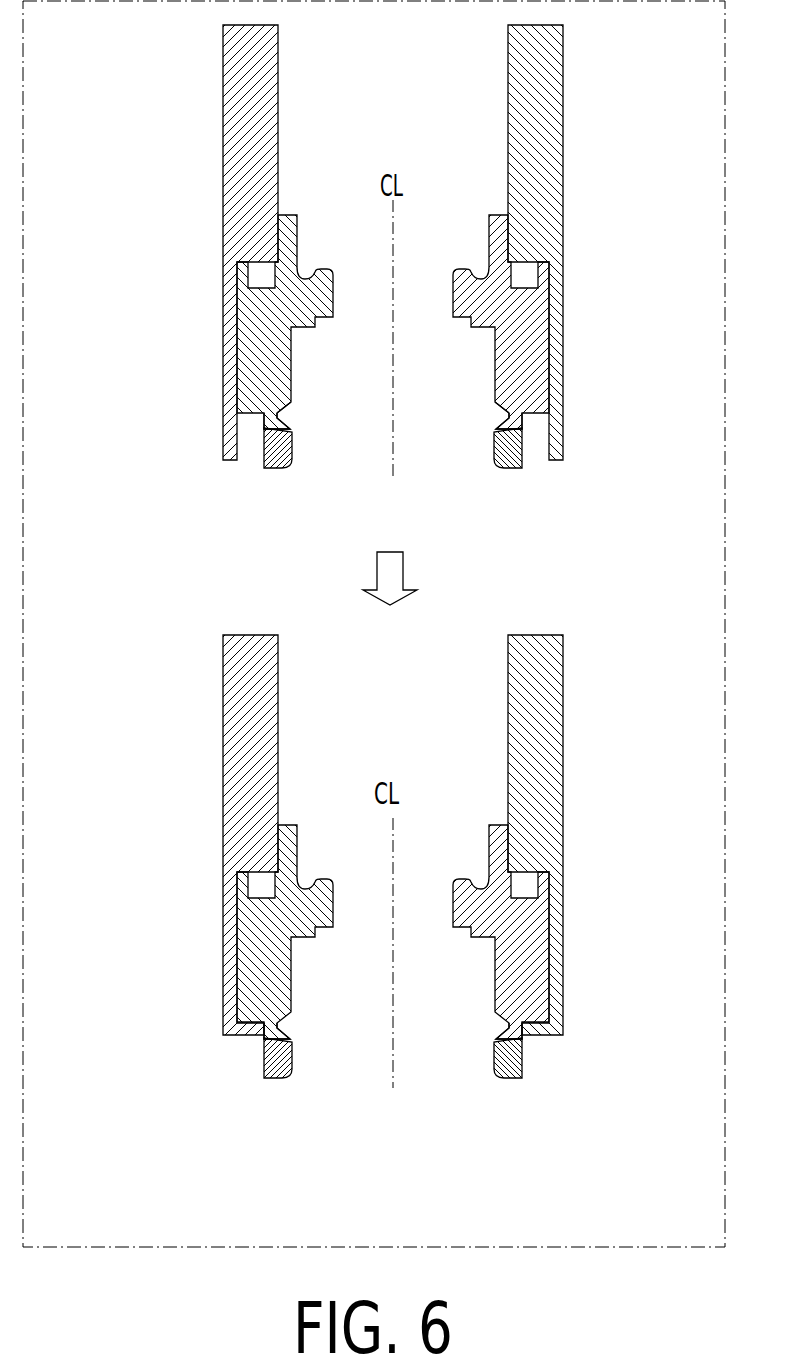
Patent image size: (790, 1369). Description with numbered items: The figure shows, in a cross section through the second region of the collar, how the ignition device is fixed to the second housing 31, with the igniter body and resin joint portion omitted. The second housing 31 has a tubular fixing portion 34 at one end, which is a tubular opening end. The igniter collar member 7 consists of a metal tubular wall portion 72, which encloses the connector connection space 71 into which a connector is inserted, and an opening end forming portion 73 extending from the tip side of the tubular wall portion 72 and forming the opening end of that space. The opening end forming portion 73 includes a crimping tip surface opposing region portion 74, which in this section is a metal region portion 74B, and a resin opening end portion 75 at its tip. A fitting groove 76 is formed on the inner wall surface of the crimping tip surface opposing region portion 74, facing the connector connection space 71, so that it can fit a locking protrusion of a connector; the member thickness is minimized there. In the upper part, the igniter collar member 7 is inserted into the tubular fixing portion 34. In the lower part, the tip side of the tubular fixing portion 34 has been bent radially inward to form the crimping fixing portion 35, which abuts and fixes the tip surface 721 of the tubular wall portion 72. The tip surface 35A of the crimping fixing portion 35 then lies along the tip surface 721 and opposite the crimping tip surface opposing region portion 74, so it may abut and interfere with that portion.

The igniter collar member 7 is at (314, 250).
The second housing 31 is at (416, 567).
The tubular fixing portion 34 is at (570, 358).
The crimping fixing portion 35 is at (560, 437).
The tip surface of the crimping fixing portion 35A is at (230, 462).
The connector connection space 71 is at (438, 388).
The tubular wall portion 72 is at (273, 370).
The tip surface of the tubular wall portion 721 is at (537, 415).
The opening end forming portion 73 is at (102, 417).
The crimping tip surface opposing region portion 74 is at (333, 791).
The metal region portion 74B is at (333, 791).
The opening end portion 75 is at (263, 450).
The fitting groove 76 is at (276, 420).